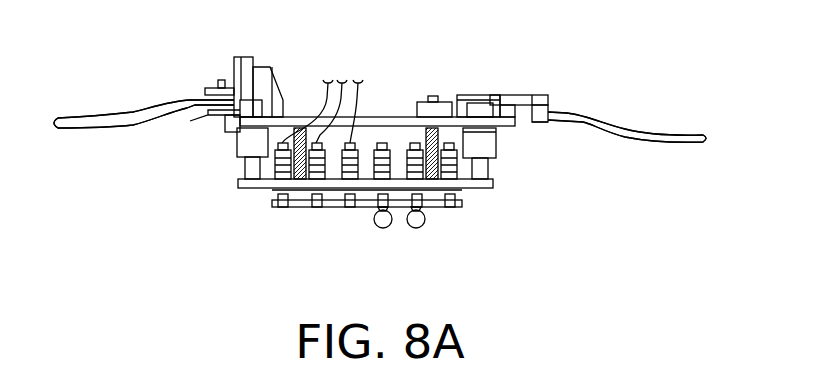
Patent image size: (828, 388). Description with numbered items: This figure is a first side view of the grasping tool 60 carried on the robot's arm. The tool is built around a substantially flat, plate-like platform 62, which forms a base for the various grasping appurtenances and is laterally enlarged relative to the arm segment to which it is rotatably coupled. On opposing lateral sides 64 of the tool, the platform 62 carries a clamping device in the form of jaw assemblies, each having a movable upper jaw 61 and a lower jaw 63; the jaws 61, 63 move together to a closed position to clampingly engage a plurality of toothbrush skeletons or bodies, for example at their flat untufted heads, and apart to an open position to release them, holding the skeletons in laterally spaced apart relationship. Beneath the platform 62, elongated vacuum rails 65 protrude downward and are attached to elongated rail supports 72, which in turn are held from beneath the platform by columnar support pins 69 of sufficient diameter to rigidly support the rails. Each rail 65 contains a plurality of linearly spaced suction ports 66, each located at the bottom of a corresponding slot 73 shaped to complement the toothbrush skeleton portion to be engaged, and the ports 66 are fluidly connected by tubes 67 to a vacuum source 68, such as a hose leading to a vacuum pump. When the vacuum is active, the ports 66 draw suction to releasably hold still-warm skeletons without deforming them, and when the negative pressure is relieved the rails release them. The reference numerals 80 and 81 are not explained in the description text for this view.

The grasping tool 60 is at (406, 148).
The upper jaw 61 is at (207, 90).
The platform 62 is at (385, 104).
The lower jaw 63 is at (208, 117).
The lateral sides 64 is at (178, 87).
The vacuum rails 65 is at (457, 203).
The suction ports 66 is at (282, 207).
The tubes 67 is at (324, 95).
The vacuum source 68 is at (358, 70).
The columnar support pins 69 is at (237, 147).
The rail supports 72 is at (495, 183).
The slot 73 is at (352, 207).
The light source 80 is at (422, 227).
The arm end 81 is at (105, 127).